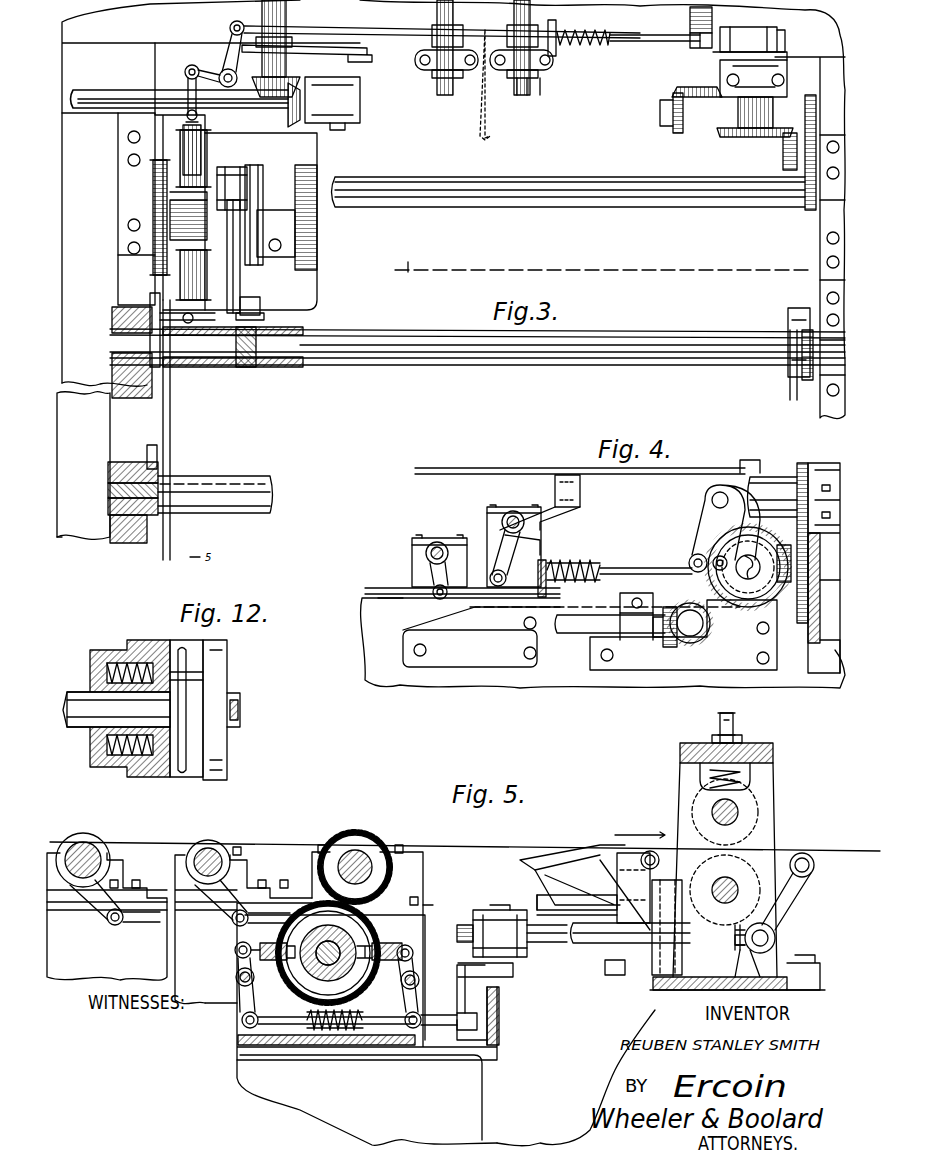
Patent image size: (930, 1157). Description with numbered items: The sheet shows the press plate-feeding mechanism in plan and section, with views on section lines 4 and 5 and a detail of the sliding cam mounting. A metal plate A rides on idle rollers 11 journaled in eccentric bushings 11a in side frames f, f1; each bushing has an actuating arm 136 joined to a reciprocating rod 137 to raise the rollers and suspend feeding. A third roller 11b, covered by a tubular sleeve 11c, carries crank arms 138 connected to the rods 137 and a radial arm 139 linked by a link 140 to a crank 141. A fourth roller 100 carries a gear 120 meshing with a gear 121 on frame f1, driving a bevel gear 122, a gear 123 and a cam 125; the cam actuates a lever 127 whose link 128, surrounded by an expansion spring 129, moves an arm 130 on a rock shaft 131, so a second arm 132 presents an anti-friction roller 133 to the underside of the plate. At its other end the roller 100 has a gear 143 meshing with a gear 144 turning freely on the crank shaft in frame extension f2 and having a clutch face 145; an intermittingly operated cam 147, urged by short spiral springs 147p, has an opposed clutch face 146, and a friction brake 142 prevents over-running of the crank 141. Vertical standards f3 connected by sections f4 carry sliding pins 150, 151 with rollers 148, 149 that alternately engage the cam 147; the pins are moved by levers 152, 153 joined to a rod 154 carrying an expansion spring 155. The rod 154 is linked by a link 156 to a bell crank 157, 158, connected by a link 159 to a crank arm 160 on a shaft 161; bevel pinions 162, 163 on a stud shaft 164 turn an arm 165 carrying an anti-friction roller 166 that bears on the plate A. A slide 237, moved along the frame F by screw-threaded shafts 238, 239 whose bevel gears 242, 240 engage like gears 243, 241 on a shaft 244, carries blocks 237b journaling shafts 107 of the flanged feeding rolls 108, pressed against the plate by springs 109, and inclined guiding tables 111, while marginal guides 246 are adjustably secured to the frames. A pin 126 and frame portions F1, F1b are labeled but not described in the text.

In FIG. 3, the section line 4 is at (800, 300).
In FIG. 3, the section line 5 is at (493, 88).
In FIG. 3, the second series of rollers 11 is at (250, 478).
In FIG. 5, the second series of rollers 11 is at (112, 836).
In FIG. 3, the eccentric bushings 11a is at (107, 496).
In FIG. 5, the eccentric bushings 11a is at (52, 855).
In FIG. 3, the third roller 11b is at (265, 342).
In FIG. 5, the third roller 11b is at (220, 842).
In FIG. 3, the tubular sleeve 11c is at (625, 340).
In FIG. 3, the fourth roller 100 is at (705, 222).
In FIG. 4, the fourth roller 100 is at (758, 480).
In FIG. 5, the fourth roller 100 is at (322, 850).
In FIG. 5, the shafts 107 is at (712, 810).
In FIG. 5, the flanged guiding and feeding rolls 108 is at (765, 812).
In FIG. 5, the springs 109 is at (745, 735).
In FIG. 5, the guiding and supporting tables 111 is at (540, 856).
In FIG. 3, the gear 120 is at (800, 228).
In FIG. 4, the gear 120 is at (808, 463).
In FIG. 3, the gear 121 is at (812, 100).
In FIG. 4, the gear 121 is at (800, 625).
In FIG. 3, the bevel gear 122 is at (783, 158).
In FIG. 4, the bevel gear 122 is at (783, 550).
In FIG. 3, the gear 123 is at (730, 137).
In FIG. 4, the gear 123 is at (752, 528).
In FIG. 3, the cam 125 is at (780, 40).
In FIG. 4, the cam 125 is at (718, 571).
In FIG. 4, the pivot pin 126 is at (698, 572).
In FIG. 3, the lever 127 is at (722, 24).
In FIG. 4, the lever 127 is at (705, 535).
In FIG. 3, the link 128 is at (628, 34).
In FIG. 4, the link 128 is at (630, 562).
In FIG. 3, the expansion spring 129 is at (575, 33).
In FIG. 4, the expansion spring 129 is at (575, 560).
In FIG. 3, the arm 130 is at (548, 32).
In FIG. 4, the arm 130 is at (542, 578).
In FIG. 3, the rock shaft 131 is at (530, 85).
In FIG. 4, the rock shaft 131 is at (513, 510).
In FIG. 5, the rock shaft 131 is at (535, 888).
In FIG. 4, the second arm 132 is at (582, 513).
In FIG. 5, the second arm 132 is at (610, 893).
In FIG. 4, the anti-friction roller 133 is at (565, 475).
In FIG. 5, the anti-friction roller 133 is at (650, 850).
In FIG. 3, the actuating arm 136 is at (147, 445).
In FIG. 5, the actuating arm 136 is at (108, 912).
In FIG. 3, the reciprocating rod 137 is at (790, 388).
In FIG. 5, the reciprocating rod 137 is at (110, 925).
In FIG. 3, the crank arms 138 is at (150, 295).
In FIG. 5, the crank arms 138 is at (235, 882).
In FIG. 3, the radial arm 139 is at (262, 318).
In FIG. 4, the radial arm 139 is at (540, 548).
In FIG. 3, the link 140 is at (240, 285).
In FIG. 12, the link 140 is at (190, 780).
In FIG. 3, the crank 141 is at (250, 182).
In FIG. 12, the crank 141 is at (225, 672).
In FIG. 3, the friction brake 142 is at (317, 238).
In FIG. 3, the gear 143 is at (153, 185).
In FIG. 5, the gear 143 is at (365, 838).
In FIG. 3, the gear 144 is at (118, 262).
In FIG. 5, the gear 144 is at (370, 930).
In FIG. 3, the clutch face 145 is at (118, 233).
In FIG. 3, the clutch face 146 is at (172, 218).
In FIG. 5, the clutch face 146 is at (335, 918).
In FIG. 3, the intermittingly operated cam 147 is at (214, 172).
In FIG. 12, the intermittingly operated cam 147 is at (110, 650).
In FIG. 12, the short spiral springs 147p is at (107, 672).
In FIG. 3, the roller 148 is at (208, 160).
In FIG. 5, the roller 148 is at (360, 984).
In FIG. 3, the roller 149 is at (200, 262).
In FIG. 5, the roller 149 is at (278, 968).
In FIG. 3, the sliding pin 150 is at (197, 128).
In FIG. 5, the sliding pin 150 is at (412, 947).
In FIG. 3, the sliding pin 151 is at (192, 322).
In FIG. 5, the sliding pin 151 is at (250, 947).
In FIG. 5, the lever 152 is at (420, 985).
In FIG. 5, the lever 153 is at (240, 992).
In FIG. 5, the rod 154 is at (278, 1014).
In FIG. 5, the expansion spring 155 is at (366, 1015).
In FIG. 3, the link 156 is at (185, 73).
In FIG. 5, the link 156 is at (447, 1020).
In FIG. 3, the bell crank arm 157 is at (210, 80).
In FIG. 5, the bell crank arm 157 is at (477, 1022).
In FIG. 3, the bell crank 158 is at (230, 28).
In FIG. 5, the bell crank 158 is at (497, 980).
In FIG. 4, the link 159 is at (390, 588).
In FIG. 5, the link 159 is at (515, 970).
In FIG. 3, the crank arm 160 is at (462, 30).
In FIG. 4, the crank arm 160 is at (427, 561).
In FIG. 5, the crank arm 160 is at (518, 950).
In FIG. 3, the shaft 161 is at (437, 17).
In FIG. 4, the shaft 161 is at (437, 540).
In FIG. 5, the shaft 161 is at (560, 950).
In FIG. 5, the bevel pinion 162 is at (748, 960).
In FIG. 5, the bevel pinion 163 is at (753, 953).
In FIG. 5, the stud shaft 164 is at (778, 938).
In FIG. 5, the arm 165 is at (798, 890).
In FIG. 5, the anti-friction roller 166 is at (812, 865).
In FIG. 5, the slide 237 is at (680, 780).
In FIG. 5, the blocks 237b is at (760, 785).
In FIG. 3, the screw threaded shaft 238 is at (288, 14).
In FIG. 3, the screw threaded shaft 239 is at (690, 22).
In FIG. 3, the bevel gear 240 is at (700, 100).
In FIG. 4, the bevel gear 240 is at (700, 645).
In FIG. 3, the bevel gear 241 is at (677, 133).
In FIG. 4, the bevel gear 241 is at (675, 647).
In FIG. 3, the bevel gear 242 is at (305, 75).
In FIG. 3, the bevel gear 243 is at (288, 115).
In FIG. 4, the shaft 244 is at (560, 635).
In FIG. 4, the marginal guides 246 is at (750, 460).
In FIG. 4, the metal plate A is at (460, 468).
In FIG. 5, the metal plate A is at (543, 845).
In FIG. 4, the frame F is at (372, 645).
In FIG. 3, the frame F1 is at (68, 540).
In FIG. 5, the frame F1b is at (205, 1015).
In FIG. 3, the side frame f is at (125, 545).
In FIG. 3, the side frame f1 is at (832, 418).
In FIG. 3, the extension frame f2 is at (318, 303).
In FIG. 3, the vertical standards f3 is at (150, 95).
In FIG. 5, the sections f4 is at (400, 935).